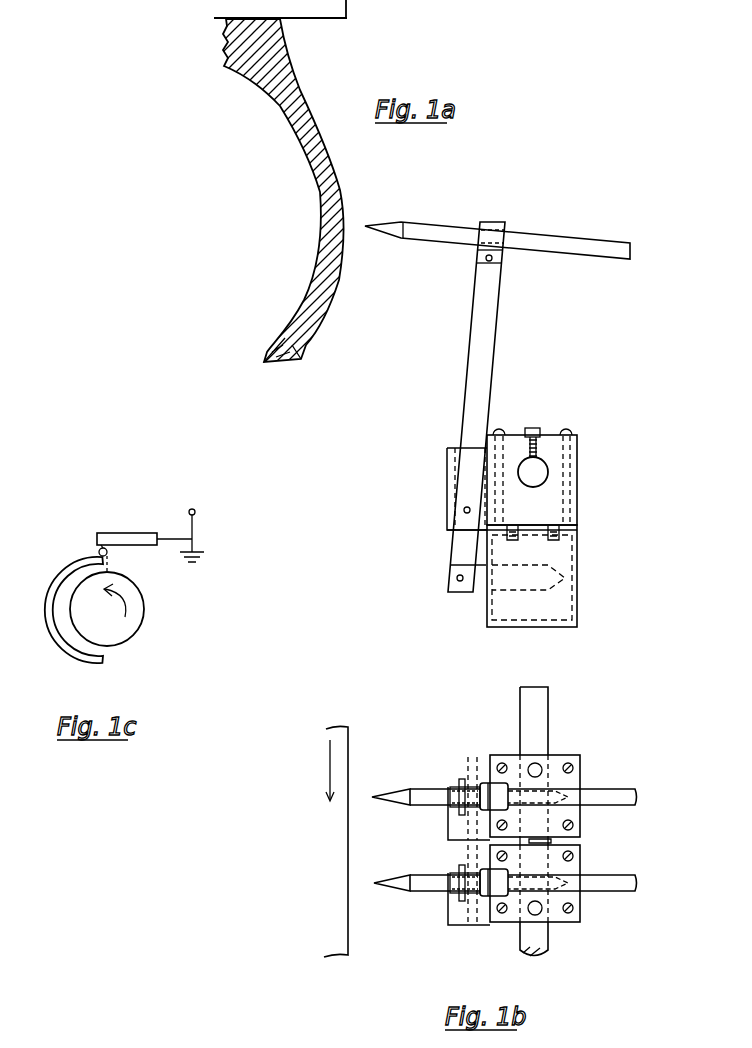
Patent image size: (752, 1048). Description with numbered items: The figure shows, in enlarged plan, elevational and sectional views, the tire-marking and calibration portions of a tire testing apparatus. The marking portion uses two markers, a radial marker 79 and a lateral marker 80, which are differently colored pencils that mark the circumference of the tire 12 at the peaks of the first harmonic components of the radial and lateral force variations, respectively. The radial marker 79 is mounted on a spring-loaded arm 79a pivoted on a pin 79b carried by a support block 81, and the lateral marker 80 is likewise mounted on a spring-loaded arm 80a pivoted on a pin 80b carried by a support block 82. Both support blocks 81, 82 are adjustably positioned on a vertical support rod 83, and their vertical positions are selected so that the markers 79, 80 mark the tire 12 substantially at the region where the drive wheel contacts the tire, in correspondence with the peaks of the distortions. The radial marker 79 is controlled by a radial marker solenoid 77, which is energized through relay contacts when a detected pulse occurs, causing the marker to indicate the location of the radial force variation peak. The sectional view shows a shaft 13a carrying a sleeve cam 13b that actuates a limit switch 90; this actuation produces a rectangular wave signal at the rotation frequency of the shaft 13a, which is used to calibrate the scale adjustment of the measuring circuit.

In FIG. 1A, the tire 12 is at (337, 156).
In FIG. 1B, the tire 12 is at (350, 744).
In FIG. 1C, the shaft 13a is at (145, 626).
In FIG. 1C, the sleeve cam 13b is at (69, 648).
In FIG. 1A, the radial marker solenoid 77 is at (578, 590).
In FIG. 1A, the radial marker 79 is at (567, 240).
In FIG. 1B, the radial marker 79 is at (423, 879).
In FIG. 1A, the spring-loaded arm 79a is at (498, 347).
In FIG. 1B, the spring-loaded arm 79a is at (445, 888).
In FIG. 1A, the pin 79b is at (462, 511).
In FIG. 1B, the pin 79b is at (470, 925).
In FIG. 1B, the lateral marker 80 is at (414, 790).
In FIG. 1B, the spring-loaded arm 80a is at (445, 800).
In FIG. 1B, the pin 80b is at (474, 792).
In FIG. 1A, the support block 81 is at (578, 506).
In FIG. 1B, the support block 81 is at (580, 908).
In FIG. 1B, the support block 82 is at (580, 822).
In FIG. 1A, the vertical support rod 83 is at (549, 472).
In FIG. 1B, the vertical support rod 83 is at (548, 715).
In FIG. 1C, the limit switch 90 is at (127, 533).